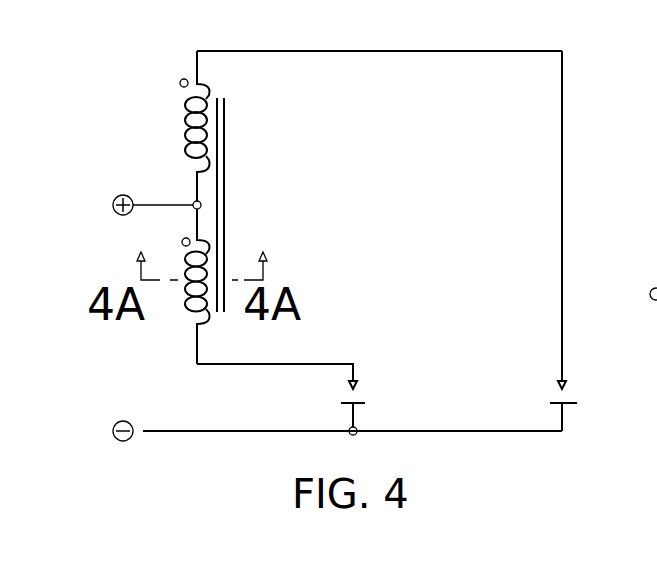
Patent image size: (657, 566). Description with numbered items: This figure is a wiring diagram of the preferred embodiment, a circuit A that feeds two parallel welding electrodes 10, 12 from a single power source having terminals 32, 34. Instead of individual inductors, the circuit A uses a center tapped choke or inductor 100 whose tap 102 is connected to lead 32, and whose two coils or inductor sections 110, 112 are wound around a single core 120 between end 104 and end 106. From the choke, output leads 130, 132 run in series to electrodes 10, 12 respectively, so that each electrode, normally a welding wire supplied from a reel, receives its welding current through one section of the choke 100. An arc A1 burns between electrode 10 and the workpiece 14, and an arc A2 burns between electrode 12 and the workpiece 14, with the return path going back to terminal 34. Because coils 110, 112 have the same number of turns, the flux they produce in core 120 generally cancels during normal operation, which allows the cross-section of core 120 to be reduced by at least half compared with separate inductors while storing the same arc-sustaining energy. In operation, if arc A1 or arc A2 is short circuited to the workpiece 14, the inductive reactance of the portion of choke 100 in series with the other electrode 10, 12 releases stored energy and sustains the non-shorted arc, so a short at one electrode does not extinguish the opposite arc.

The center tapped choke 100 is at (208, 208).
The coil 110 is at (180, 108).
The coil 112 is at (183, 305).
The core 120 is at (225, 147).
The tap 102 is at (195, 203).
The end 104 is at (197, 348).
The end 106 is at (196, 62).
The output lead 130 is at (287, 366).
The output lead 132 is at (453, 52).
The electrode 10 is at (389, 376).
The electrode 12 is at (602, 241).
The workpiece 14 is at (483, 434).
The terminal 32 is at (160, 205).
The terminal 34 is at (170, 432).
The arc A1 is at (362, 397).
The arc A2 is at (568, 394).
The circuit A is at (509, 36).